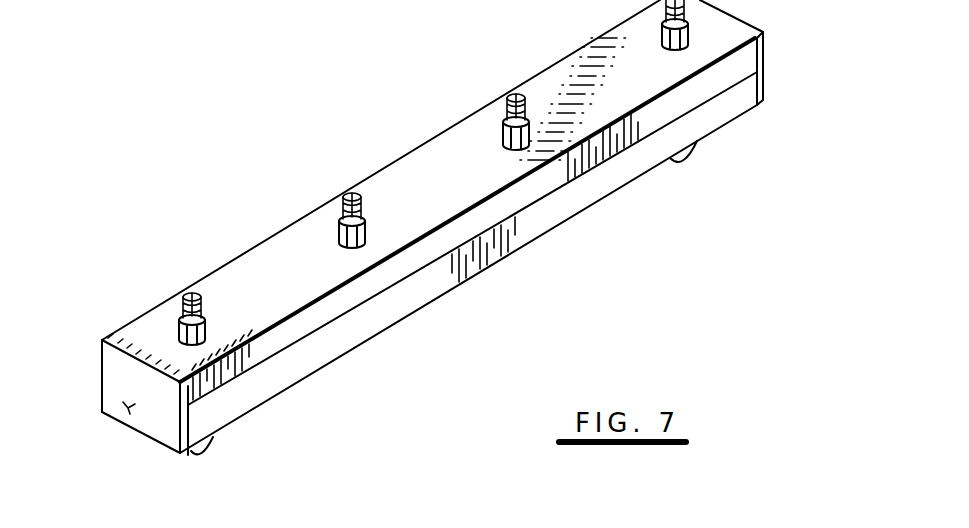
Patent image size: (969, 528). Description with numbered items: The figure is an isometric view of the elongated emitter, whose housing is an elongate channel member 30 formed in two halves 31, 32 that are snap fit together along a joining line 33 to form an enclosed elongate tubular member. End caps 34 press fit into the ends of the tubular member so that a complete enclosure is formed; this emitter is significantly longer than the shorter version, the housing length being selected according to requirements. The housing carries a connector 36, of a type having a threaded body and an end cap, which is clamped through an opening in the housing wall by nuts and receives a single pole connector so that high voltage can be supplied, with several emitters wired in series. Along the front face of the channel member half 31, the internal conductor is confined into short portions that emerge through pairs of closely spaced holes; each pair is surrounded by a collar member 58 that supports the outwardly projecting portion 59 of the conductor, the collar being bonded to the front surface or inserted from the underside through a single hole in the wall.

The channel member 30 is at (488, 276).
The channel member half 31 is at (455, 152).
The channel member half 32 is at (535, 222).
The joining line 33 is at (370, 300).
The end caps 34 is at (764, 68).
The connector 36 is at (207, 451).
The collar member 58 is at (340, 240).
The projecting portion of the conductor 59 is at (348, 192).